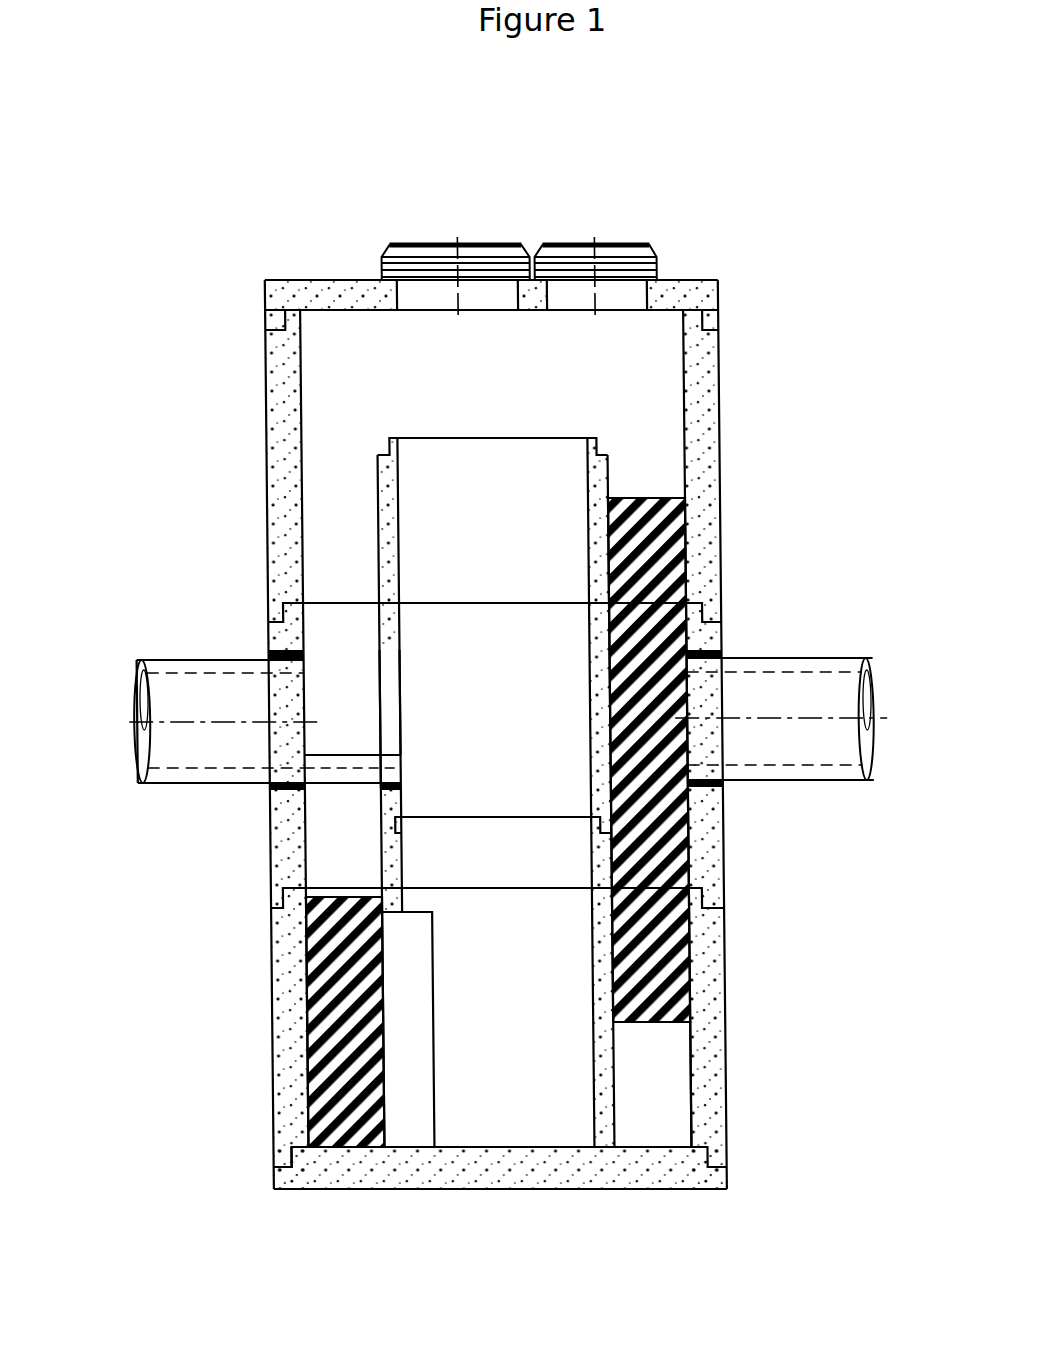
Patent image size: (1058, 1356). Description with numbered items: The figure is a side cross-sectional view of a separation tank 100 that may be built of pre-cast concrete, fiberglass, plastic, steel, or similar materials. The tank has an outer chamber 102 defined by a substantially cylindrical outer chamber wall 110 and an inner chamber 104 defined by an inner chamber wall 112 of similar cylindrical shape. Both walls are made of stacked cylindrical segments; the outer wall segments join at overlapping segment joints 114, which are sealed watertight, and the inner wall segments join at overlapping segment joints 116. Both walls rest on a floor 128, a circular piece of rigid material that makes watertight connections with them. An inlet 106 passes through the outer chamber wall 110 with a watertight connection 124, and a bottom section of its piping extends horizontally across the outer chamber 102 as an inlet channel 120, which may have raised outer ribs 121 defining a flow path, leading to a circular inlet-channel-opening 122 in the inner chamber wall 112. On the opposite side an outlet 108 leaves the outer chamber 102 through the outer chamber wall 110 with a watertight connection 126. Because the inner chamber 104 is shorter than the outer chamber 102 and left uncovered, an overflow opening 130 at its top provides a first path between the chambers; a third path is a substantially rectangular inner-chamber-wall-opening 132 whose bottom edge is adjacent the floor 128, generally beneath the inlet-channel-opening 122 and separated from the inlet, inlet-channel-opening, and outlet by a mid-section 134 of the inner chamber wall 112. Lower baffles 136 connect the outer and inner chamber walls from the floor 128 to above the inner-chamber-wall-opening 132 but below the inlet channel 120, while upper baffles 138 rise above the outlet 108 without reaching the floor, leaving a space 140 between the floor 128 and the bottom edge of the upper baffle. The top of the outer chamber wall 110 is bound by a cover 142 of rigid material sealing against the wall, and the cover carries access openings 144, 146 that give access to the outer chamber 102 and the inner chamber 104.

The separation tank 100 is at (245, 203).
The outer chamber 102 is at (358, 349).
The inner chamber 104 is at (495, 644).
The inlet 106 is at (170, 660).
The outlet 108 is at (820, 657).
The outer chamber wall 110 is at (283, 357).
The inner chamber wall 112 is at (382, 470).
The segment joints 114 is at (274, 908).
The segment joints 116 is at (384, 817).
The inlet channel 120 is at (339, 777).
The raised outer ribs 121 is at (340, 752).
The inlet-channel-opening 122 is at (385, 687).
The watertight connection 124 is at (263, 653).
The watertight connection 126 is at (695, 653).
The floor 128 is at (688, 1177).
The overflow opening 130 is at (528, 430).
The inner-chamber-wall-opening 132 is at (406, 1120).
The mid-section 134 is at (384, 853).
The lower baffles 136 is at (280, 1148).
The upper baffles 138 is at (642, 500).
The space 140 is at (641, 1080).
The cover 142 is at (675, 287).
The access opening 144 is at (414, 240).
The access opening 146 is at (631, 237).